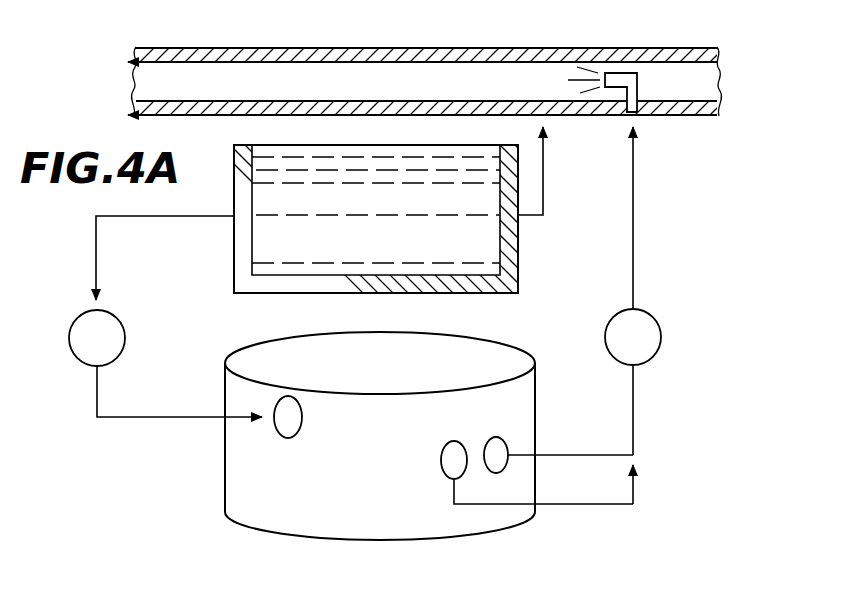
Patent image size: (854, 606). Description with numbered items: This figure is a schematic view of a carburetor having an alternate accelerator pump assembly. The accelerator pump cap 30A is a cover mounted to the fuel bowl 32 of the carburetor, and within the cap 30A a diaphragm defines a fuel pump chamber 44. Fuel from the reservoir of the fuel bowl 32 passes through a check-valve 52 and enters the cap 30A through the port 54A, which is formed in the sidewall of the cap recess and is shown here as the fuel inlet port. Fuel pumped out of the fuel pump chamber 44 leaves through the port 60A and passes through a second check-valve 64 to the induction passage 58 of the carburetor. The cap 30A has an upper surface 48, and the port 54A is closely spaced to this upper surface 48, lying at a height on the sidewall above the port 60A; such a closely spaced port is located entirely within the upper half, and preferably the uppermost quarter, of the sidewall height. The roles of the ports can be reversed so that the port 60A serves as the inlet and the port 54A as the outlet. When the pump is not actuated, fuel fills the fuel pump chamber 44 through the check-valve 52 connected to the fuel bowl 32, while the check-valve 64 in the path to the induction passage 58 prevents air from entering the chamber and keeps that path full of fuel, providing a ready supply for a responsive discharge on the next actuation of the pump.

The induction passage 58 is at (458, 78).
The fuel bowl 32 is at (473, 254).
The check-valve 52 is at (124, 331).
The check-valve 64 is at (657, 323).
The upper surface 48 is at (241, 361).
The accelerator pump cap 30A is at (427, 526).
The fuel pump chamber 44 is at (477, 515).
The port 54A is at (302, 410).
The port 60A is at (487, 440).